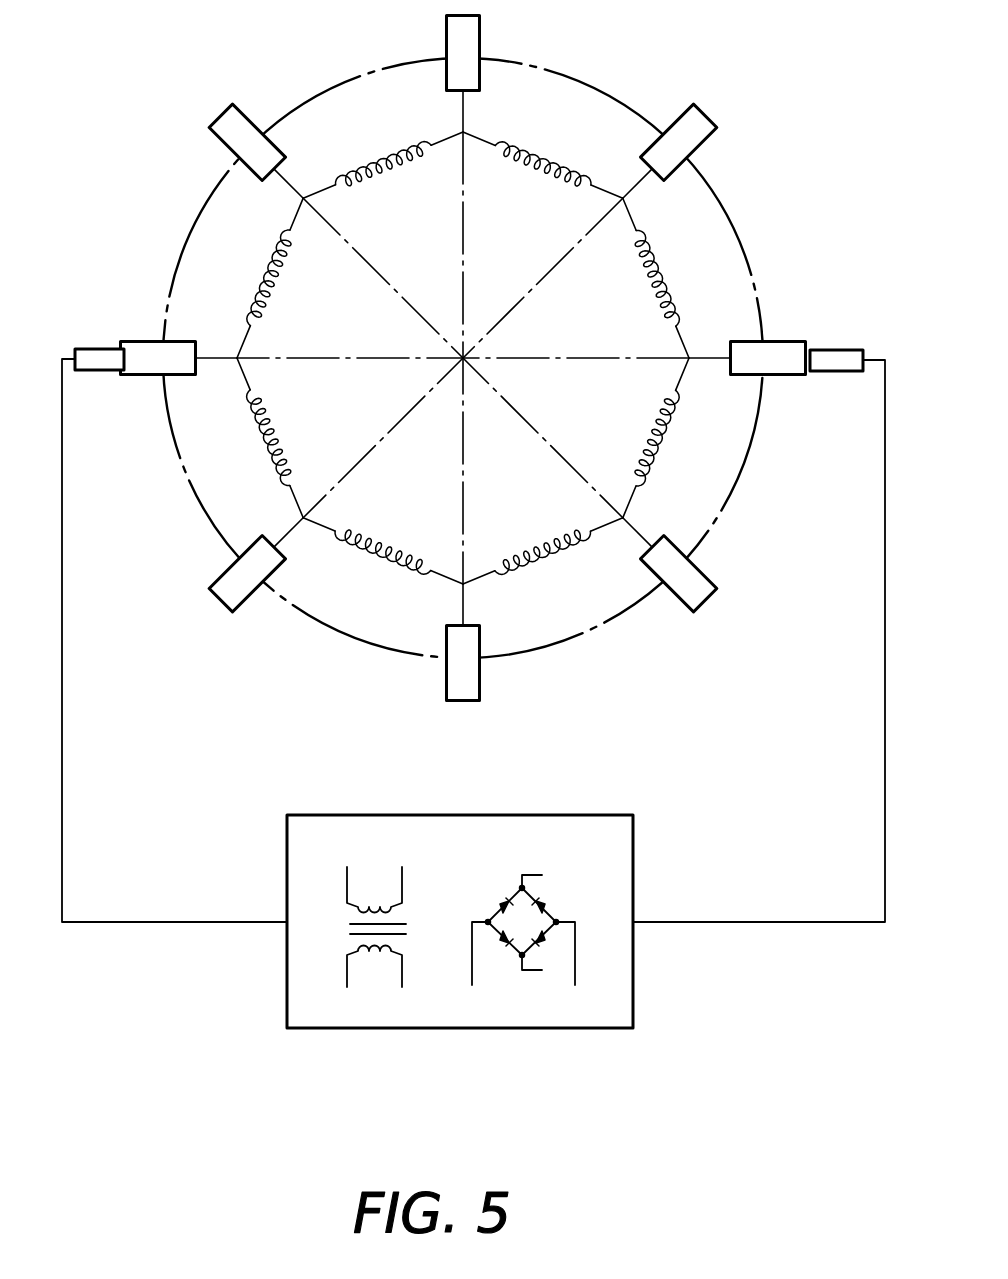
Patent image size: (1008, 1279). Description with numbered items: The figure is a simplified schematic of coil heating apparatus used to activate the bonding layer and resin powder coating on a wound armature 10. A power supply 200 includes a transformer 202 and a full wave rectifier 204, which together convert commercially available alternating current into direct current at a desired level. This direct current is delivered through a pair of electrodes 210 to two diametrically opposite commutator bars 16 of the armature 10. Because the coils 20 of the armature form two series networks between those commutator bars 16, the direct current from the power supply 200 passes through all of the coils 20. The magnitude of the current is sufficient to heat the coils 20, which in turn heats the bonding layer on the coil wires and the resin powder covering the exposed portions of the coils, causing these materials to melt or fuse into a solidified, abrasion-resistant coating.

The electric motor armature 10 is at (776, 208).
The commutator bars 16 is at (697, 136).
The coils 20 is at (546, 150).
The power supply 200 is at (511, 815).
The transformer 202 is at (408, 888).
The full wave rectifier 204 is at (547, 904).
The electrodes 210 is at (100, 346).